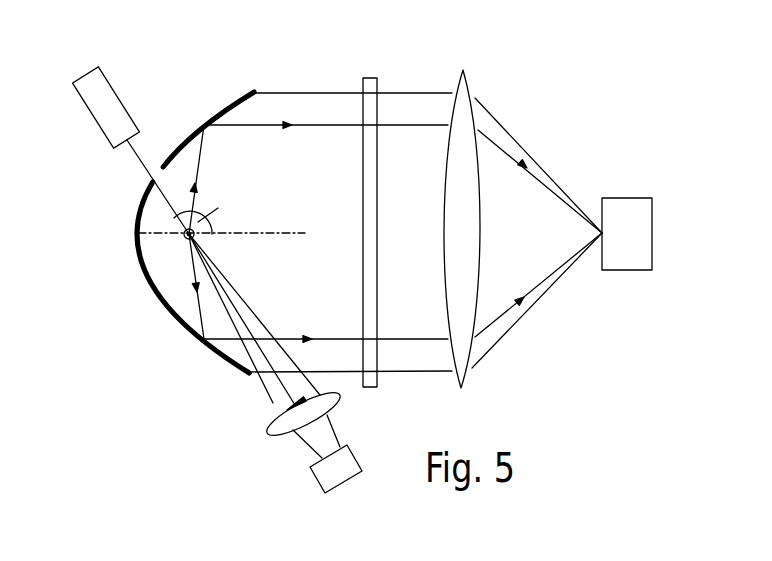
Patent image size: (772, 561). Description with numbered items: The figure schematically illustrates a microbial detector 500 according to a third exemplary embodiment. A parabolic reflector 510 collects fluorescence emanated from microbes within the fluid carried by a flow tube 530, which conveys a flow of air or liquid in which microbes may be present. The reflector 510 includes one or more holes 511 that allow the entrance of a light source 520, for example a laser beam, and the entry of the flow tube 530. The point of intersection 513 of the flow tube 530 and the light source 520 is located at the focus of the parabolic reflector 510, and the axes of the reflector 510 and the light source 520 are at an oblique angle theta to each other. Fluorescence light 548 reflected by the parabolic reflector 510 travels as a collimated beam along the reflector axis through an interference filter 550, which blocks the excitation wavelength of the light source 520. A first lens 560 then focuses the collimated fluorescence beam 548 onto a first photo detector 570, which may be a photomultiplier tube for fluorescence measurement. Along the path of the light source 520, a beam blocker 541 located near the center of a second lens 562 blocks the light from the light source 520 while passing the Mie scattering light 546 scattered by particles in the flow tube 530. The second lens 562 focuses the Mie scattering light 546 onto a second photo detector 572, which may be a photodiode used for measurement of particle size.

The microbial detector 500 is at (370, 36).
The parabolic reflector 510 is at (163, 237).
The hole 511 is at (159, 165).
The point of intersection 513 is at (185, 237).
The light source 520 is at (73, 85).
The flow tube 530 is at (195, 238).
The beam blocker 541 is at (268, 404).
The Mie scattering light 546 is at (253, 312).
The fluorescence light 548 is at (288, 107).
The interference filter 550 is at (378, 83).
The first lens 560 is at (467, 380).
The second lens 562 is at (343, 405).
The first photo detector 570 is at (652, 232).
The second photo detector 572 is at (347, 480).